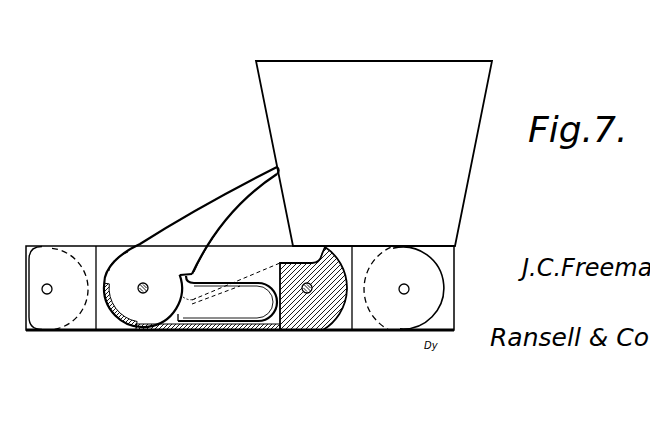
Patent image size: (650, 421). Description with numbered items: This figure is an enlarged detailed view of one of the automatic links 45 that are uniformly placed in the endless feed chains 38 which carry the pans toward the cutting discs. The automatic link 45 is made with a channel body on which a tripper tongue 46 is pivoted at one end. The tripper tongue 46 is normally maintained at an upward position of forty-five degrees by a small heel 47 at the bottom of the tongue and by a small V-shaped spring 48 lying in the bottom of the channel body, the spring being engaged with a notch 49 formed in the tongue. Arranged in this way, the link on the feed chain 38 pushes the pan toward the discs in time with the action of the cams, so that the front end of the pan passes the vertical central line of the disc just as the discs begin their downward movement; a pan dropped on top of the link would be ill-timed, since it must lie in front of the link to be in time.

The tripper tongue 46 is at (200, 208).
The heel 47 is at (104, 277).
The notch 49 is at (183, 275).
The V-shaped spring 48 is at (214, 283).
The endless feed chain 38 is at (137, 331).
The automatic link 45 is at (323, 331).